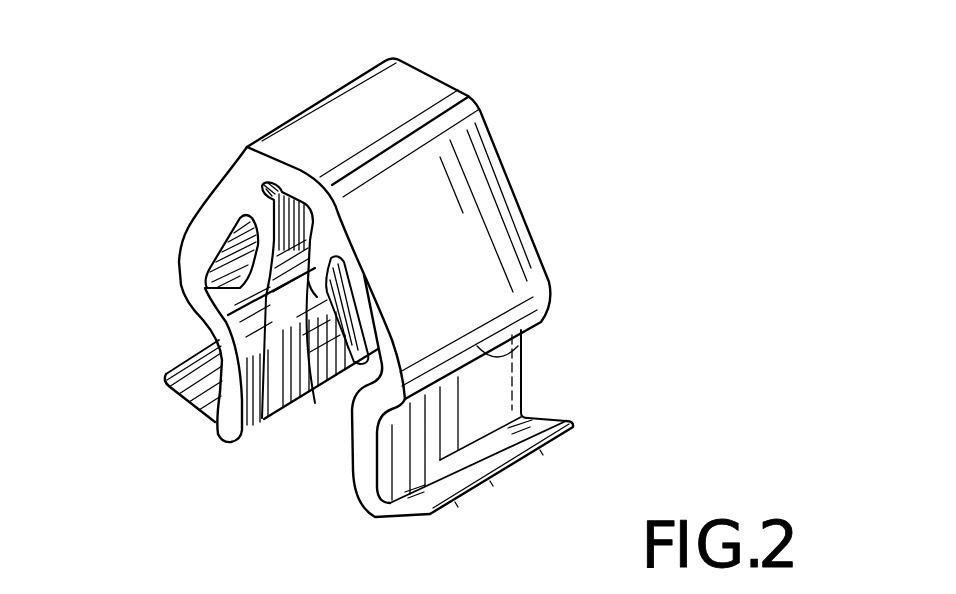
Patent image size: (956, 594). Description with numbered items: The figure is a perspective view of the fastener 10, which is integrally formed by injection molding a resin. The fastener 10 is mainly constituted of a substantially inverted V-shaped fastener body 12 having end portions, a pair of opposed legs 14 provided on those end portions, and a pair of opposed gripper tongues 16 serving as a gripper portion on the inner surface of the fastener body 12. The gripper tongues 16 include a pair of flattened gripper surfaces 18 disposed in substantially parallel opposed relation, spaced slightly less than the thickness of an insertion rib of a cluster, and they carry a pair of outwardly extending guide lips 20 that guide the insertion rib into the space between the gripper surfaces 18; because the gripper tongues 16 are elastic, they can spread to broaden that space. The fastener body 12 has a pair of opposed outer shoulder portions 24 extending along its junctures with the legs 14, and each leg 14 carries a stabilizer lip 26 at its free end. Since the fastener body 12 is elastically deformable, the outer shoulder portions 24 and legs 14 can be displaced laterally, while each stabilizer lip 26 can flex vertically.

The fastener 10 is at (531, 110).
The fastener body 12 is at (310, 128).
The legs 14 is at (227, 361).
The gripper tongues 16 is at (262, 252).
The gripper surfaces 18 is at (262, 420).
The guide lips 20 is at (243, 277).
The outer shoulder portions 24 is at (190, 297).
The stabilizer lip 26 is at (188, 386).